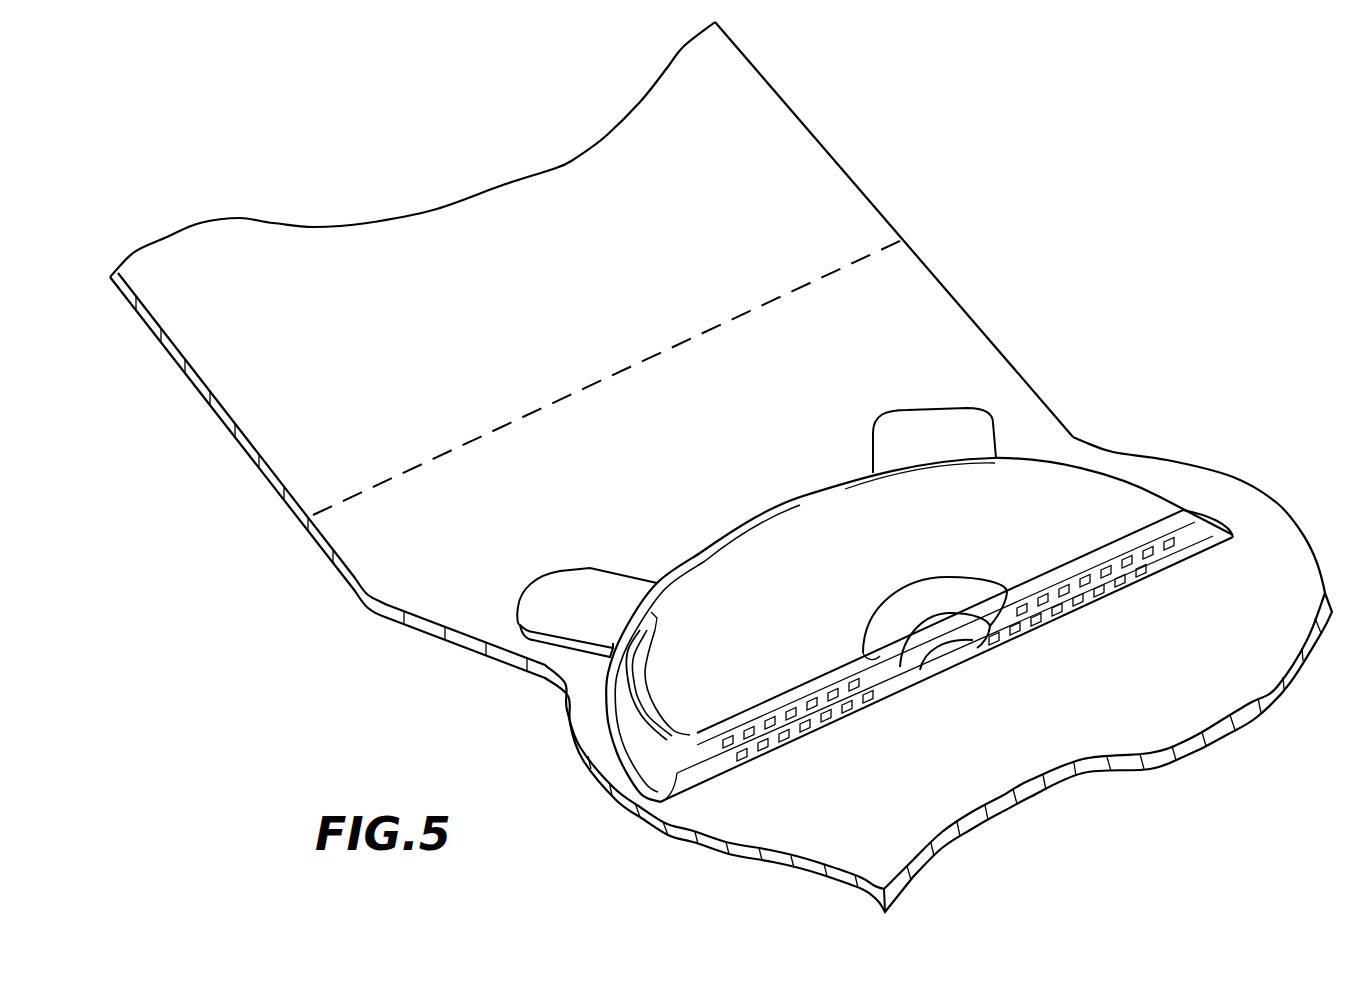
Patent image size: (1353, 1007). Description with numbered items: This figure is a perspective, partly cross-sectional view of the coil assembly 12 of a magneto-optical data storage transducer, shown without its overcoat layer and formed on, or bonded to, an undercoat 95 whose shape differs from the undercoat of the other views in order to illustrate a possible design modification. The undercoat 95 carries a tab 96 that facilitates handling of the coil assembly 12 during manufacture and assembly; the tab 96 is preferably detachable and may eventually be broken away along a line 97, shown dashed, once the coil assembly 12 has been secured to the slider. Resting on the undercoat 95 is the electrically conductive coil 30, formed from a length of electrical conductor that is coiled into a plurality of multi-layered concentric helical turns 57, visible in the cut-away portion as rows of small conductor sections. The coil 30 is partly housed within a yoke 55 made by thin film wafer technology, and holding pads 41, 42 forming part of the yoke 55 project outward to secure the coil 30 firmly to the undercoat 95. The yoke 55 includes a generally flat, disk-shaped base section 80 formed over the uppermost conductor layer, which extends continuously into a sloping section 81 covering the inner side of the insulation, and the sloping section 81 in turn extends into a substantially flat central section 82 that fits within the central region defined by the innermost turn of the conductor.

The coil assembly 12 is at (905, 103).
The tab 96 is at (470, 236).
The line 97 is at (612, 370).
The coil 30 is at (1043, 458).
The undercoat 95 is at (992, 805).
The holding pad 42 is at (552, 592).
The holding pad 41 is at (922, 427).
The yoke 55 is at (813, 492).
The base section 80 is at (722, 568).
The turns 57 is at (830, 720).
The sloping section 81 is at (963, 583).
The central section 82 is at (945, 647).